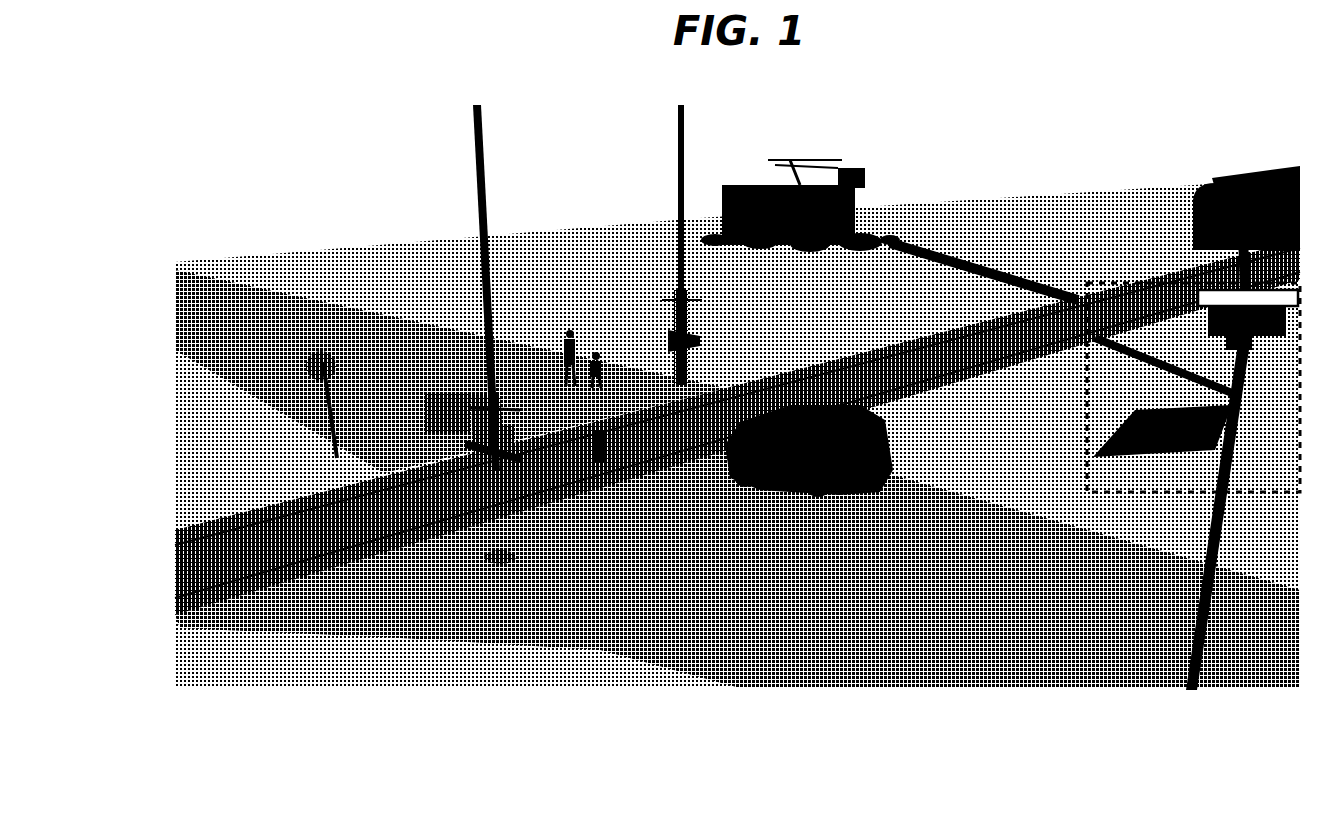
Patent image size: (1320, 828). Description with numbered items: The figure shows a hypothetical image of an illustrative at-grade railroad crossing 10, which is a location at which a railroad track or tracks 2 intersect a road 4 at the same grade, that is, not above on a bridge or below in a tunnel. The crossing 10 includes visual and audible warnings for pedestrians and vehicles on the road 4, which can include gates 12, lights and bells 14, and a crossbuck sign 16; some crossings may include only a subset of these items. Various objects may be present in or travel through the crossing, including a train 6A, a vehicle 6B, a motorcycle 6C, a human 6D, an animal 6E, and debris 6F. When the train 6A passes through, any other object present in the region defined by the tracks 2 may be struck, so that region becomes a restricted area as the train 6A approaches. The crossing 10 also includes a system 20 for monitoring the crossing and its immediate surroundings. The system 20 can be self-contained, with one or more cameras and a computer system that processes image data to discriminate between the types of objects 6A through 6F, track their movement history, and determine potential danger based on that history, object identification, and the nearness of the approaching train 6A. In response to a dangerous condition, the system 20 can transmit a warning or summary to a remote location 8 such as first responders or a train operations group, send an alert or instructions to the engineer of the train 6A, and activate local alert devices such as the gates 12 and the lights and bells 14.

The at-grade railroad crossing 10 is at (228, 151).
The railroad track 2 is at (256, 557).
The road 4 is at (930, 592).
The remote location 8 is at (796, 221).
The gates 12 is at (488, 262).
The train 6A is at (1280, 232).
The vehicle 6B is at (811, 454).
The motorcycle 6C is at (463, 429).
The human 6D is at (566, 352).
The animal 6E is at (594, 382).
The debris 6F is at (598, 440).
The lights and bells 14 is at (476, 490).
The crossbuck sign 16 is at (503, 440).
The system for monitoring the railroad crossing 20 is at (1087, 426).